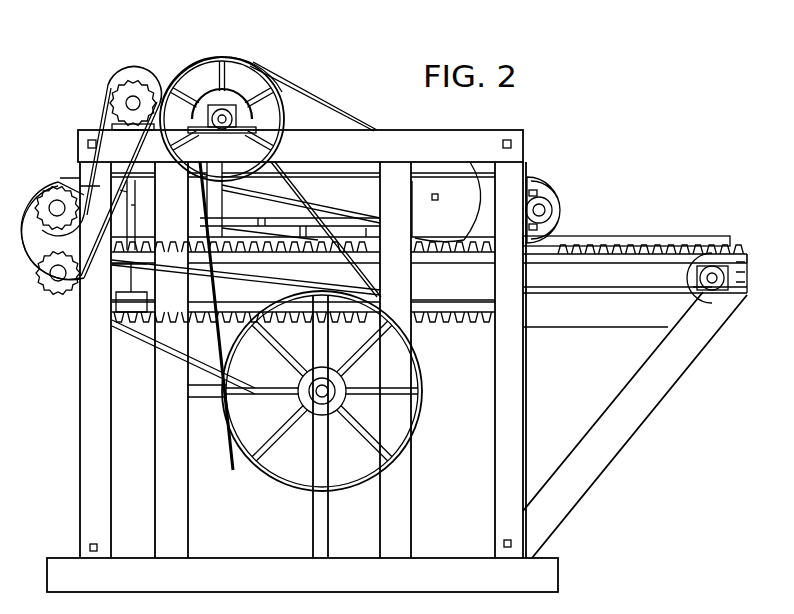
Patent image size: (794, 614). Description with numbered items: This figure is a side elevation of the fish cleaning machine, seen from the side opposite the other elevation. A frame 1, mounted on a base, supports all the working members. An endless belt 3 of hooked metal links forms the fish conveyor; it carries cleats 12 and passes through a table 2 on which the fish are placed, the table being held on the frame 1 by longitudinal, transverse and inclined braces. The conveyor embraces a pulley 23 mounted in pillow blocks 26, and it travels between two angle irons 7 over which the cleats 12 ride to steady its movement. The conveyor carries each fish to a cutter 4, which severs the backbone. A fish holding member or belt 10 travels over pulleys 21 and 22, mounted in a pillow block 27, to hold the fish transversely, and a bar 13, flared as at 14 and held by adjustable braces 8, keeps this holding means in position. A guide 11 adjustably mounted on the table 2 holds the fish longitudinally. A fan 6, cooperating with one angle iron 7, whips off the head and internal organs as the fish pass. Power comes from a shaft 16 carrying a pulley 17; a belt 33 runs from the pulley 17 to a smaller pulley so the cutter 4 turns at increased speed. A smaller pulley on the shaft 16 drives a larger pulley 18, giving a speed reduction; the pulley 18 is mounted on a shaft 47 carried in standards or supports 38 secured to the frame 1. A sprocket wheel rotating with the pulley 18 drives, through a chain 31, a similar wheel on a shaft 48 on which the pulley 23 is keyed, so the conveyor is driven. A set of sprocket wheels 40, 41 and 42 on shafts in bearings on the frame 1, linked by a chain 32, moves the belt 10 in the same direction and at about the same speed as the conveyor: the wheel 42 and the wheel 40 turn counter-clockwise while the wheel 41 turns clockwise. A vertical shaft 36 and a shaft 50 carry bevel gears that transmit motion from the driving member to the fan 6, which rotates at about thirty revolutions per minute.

The frame 1 is at (518, 400).
The table 2 is at (749, 258).
The endless belt 3 is at (450, 323).
The cutter 4 is at (446, 201).
The fan 6 is at (243, 270).
The angle irons 7 is at (478, 258).
The adjustable braces 8 is at (336, 194).
The fish holding member or belt 10 is at (418, 180).
The guide 11 is at (690, 240).
The cleats 12 is at (468, 325).
The bar 13 is at (367, 225).
The flared portion of bar 14 is at (442, 240).
The shaft 16 is at (224, 129).
The pulley 17 is at (284, 120).
The pulley 18 is at (288, 428).
The pulley 21 is at (560, 207).
The pulley 22 is at (77, 178).
The pulley 23 is at (686, 278).
The pillow blocks 26 is at (693, 288).
The pillow block 27 is at (552, 178).
The chain 31 is at (207, 373).
The chain 32 is at (127, 192).
The belt 33 is at (346, 108).
The shaft 36 is at (143, 213).
The standards or supports 38 is at (334, 389).
The sprocket wheel 40 is at (133, 105).
The sprocket wheel 41 is at (57, 208).
The sprocket wheel 42 is at (58, 273).
The shaft 47 is at (329, 395).
The shaft 48 is at (712, 290).
The shaft 50 is at (128, 105).